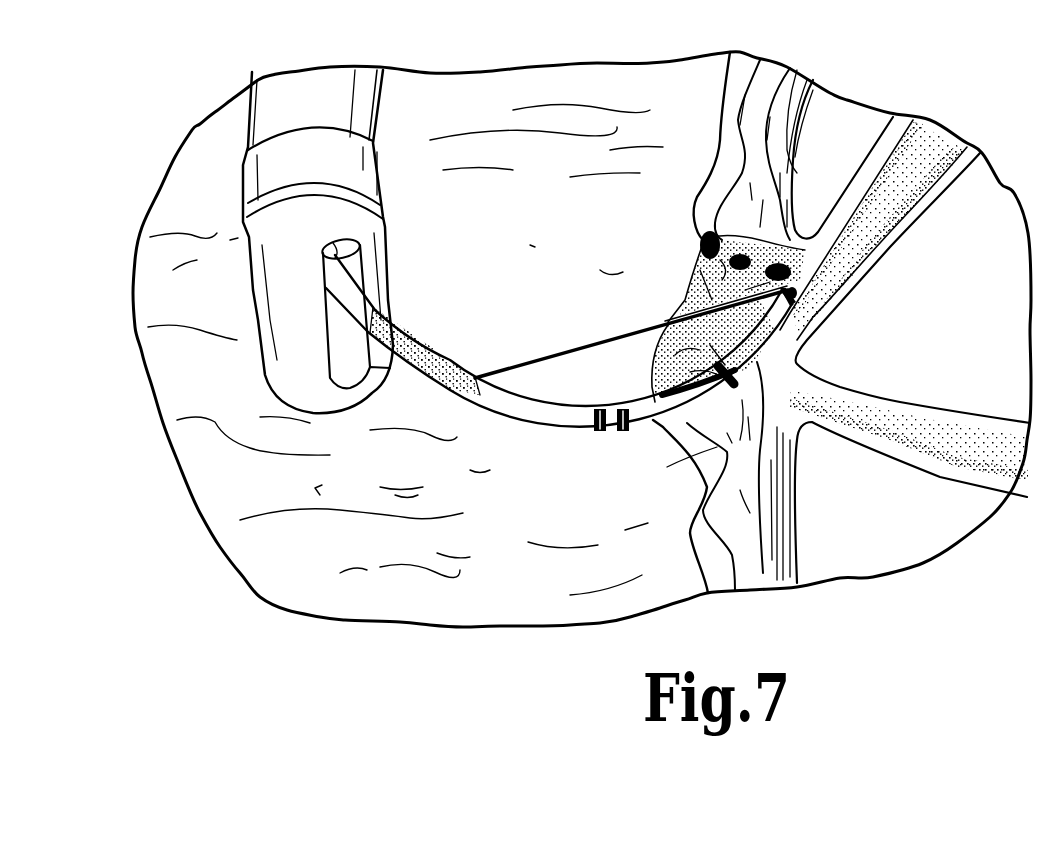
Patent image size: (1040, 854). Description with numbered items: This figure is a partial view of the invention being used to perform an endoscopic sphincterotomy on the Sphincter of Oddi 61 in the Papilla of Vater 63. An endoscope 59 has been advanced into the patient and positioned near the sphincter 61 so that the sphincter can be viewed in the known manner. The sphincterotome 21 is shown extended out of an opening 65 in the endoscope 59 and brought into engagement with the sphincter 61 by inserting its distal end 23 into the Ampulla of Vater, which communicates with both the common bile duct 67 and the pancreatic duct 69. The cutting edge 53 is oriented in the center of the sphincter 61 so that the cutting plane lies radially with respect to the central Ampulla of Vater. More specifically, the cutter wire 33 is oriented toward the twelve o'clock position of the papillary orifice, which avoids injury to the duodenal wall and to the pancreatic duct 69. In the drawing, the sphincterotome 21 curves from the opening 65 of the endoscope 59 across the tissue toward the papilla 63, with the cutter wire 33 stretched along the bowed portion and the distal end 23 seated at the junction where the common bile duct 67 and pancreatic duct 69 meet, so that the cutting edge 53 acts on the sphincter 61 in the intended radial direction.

The sphincterotome 21 is at (503, 407).
The distal end 23 is at (634, 440).
The cutter wire 33 is at (583, 349).
The cutting edge 53 is at (631, 334).
The endoscope 59 is at (247, 172).
The Sphincter of Oddi 61 is at (677, 310).
The Papilla of Vater 63 is at (604, 254).
The opening 65 is at (374, 257).
The common bile duct 67 is at (893, 240).
The pancreatic duct 69 is at (973, 470).